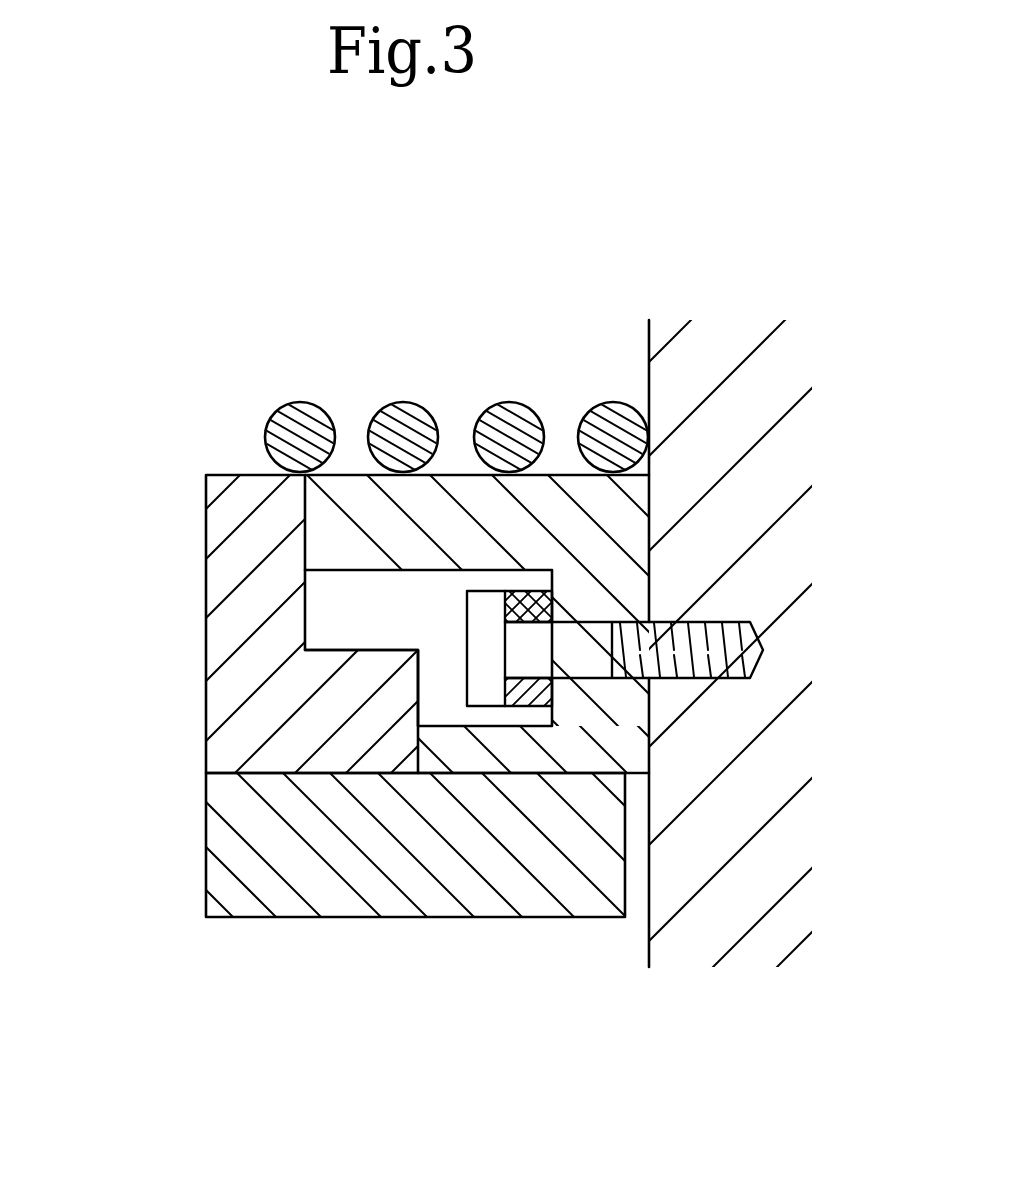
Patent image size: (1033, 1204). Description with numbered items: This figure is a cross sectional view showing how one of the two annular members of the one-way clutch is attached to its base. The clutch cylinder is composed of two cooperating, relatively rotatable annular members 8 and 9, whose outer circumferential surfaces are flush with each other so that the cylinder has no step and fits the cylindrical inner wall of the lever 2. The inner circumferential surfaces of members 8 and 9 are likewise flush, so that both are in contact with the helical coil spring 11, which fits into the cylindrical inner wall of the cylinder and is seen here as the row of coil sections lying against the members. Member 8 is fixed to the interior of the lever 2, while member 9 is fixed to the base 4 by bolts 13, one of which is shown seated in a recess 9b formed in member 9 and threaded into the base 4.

The lever 2 is at (280, 860).
The base 4 is at (732, 400).
The annular member 8 is at (245, 550).
The annular member 9 is at (583, 745).
The recess 9b is at (393, 612).
The helical coil spring 11 is at (402, 415).
The bolt 13 is at (480, 672).